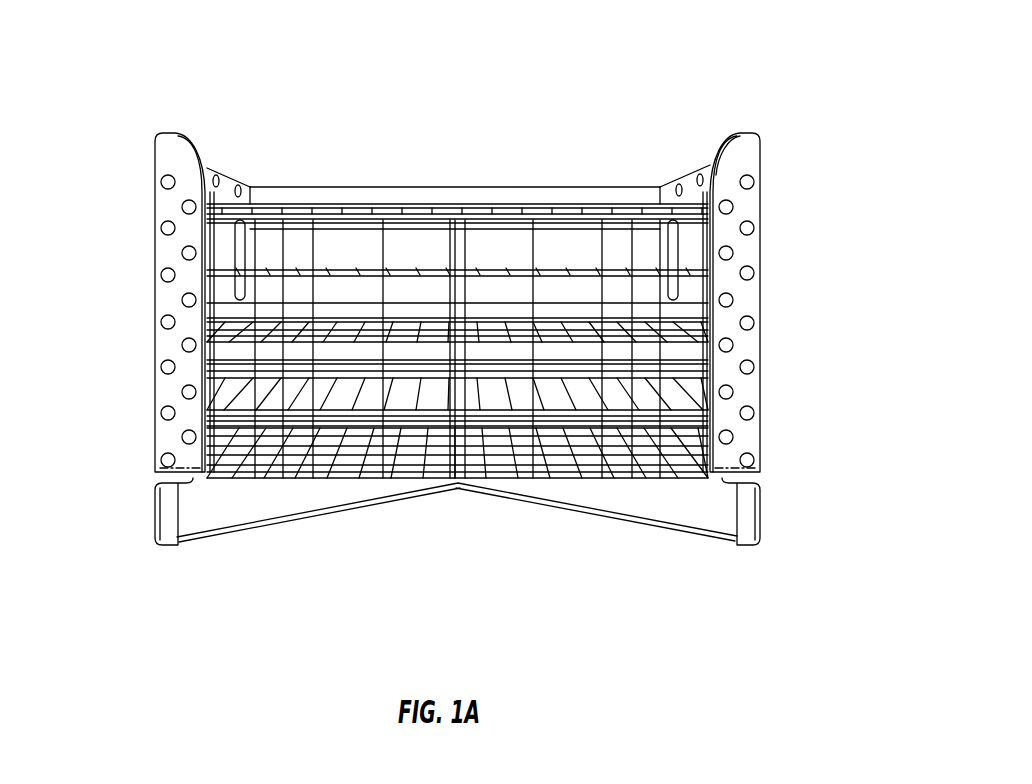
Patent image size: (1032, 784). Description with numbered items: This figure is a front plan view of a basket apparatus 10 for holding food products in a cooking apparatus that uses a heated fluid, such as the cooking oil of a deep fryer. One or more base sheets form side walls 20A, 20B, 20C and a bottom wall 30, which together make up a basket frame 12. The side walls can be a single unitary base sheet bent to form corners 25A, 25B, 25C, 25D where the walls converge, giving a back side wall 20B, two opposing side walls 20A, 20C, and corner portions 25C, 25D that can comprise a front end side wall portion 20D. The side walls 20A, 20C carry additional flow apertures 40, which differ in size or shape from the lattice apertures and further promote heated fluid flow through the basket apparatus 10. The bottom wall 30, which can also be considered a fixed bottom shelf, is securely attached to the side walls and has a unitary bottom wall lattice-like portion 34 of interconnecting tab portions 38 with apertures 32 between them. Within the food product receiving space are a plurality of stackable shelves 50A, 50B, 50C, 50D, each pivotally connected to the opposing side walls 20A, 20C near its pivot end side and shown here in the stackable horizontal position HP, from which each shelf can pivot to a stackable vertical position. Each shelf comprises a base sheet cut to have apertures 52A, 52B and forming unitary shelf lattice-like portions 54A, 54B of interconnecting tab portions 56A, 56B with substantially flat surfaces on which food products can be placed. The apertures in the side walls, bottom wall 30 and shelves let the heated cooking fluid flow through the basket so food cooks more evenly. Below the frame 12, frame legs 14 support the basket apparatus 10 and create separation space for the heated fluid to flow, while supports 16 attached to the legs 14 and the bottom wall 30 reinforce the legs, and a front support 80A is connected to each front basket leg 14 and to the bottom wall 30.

The basket apparatus 10 is at (790, 70).
The basket frame 12 is at (752, 153).
The frame legs 14 is at (156, 525).
The supports 16 is at (733, 542).
The side wall 20A is at (207, 168).
The back side wall 20B is at (440, 187).
The side wall 20C is at (664, 186).
The front end side wall portion 20D is at (753, 353).
The corner 25A is at (252, 185).
The corner 25B is at (657, 186).
The corner portion 25C is at (155, 151).
The corner portion 25D is at (762, 222).
The bottom wall 30 is at (240, 480).
The apertures 32 is at (653, 435).
The bottom wall lattice-like portion 34 is at (307, 478).
The interconnecting tab portions 38 is at (267, 477).
The flow apertures 40 is at (157, 232).
The stackable shelf 50A is at (225, 408).
The stackable shelf 50B is at (225, 335).
The stackable shelf 50C is at (250, 279).
The stackable shelf 50D is at (307, 208).
The apertures 52A is at (685, 402).
The apertures 52B is at (708, 320).
The shelf lattice-like portion 54A is at (426, 402).
The shelf lattice-like portion 54B is at (556, 354).
The interconnecting tab portions 56A is at (370, 470).
The interconnecting tab portions 56B is at (460, 486).
The front support 80A is at (225, 478).
The stackable horizontal position HP is at (519, 158).